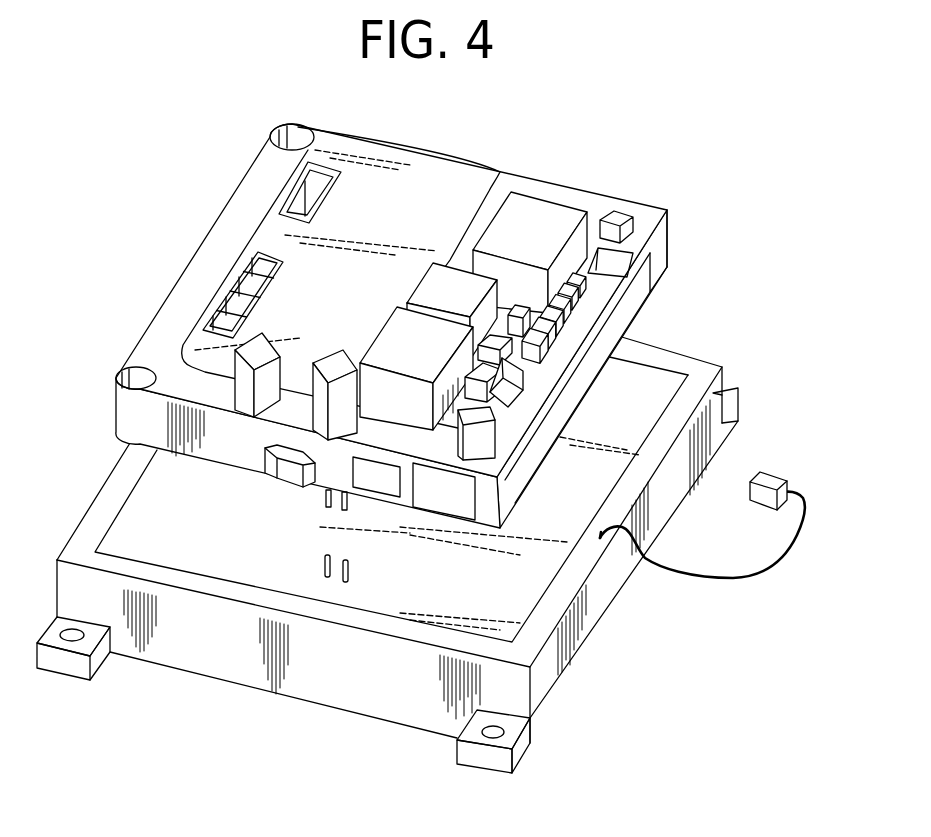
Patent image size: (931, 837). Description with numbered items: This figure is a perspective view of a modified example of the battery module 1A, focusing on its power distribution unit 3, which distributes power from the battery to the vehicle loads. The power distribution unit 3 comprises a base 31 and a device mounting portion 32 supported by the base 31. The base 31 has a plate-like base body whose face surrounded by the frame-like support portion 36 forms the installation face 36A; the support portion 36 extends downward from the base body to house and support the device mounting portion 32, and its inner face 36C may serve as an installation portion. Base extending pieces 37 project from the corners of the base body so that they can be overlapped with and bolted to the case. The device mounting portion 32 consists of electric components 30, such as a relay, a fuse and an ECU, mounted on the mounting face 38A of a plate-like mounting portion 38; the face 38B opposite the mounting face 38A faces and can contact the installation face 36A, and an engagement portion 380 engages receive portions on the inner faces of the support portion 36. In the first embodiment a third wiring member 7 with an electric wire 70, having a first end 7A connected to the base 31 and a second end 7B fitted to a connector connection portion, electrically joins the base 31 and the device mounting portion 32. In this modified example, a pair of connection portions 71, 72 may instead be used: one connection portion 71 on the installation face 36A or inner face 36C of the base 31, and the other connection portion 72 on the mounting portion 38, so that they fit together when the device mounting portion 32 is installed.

The battery module 1A is at (756, 149).
The power distribution unit 3 is at (800, 202).
The electric components 30 is at (392, 346).
The base 31 is at (740, 432).
The device mounting portion 32 is at (670, 249).
The support portion 36 is at (727, 388).
The installation face 36A is at (527, 592).
The inner face 36C is at (656, 403).
The base extending pieces 37 is at (735, 398).
The mounting portion 38 is at (662, 235).
The mounting face 38A is at (649, 213).
The face opposite of the mounting face 38B is at (653, 290).
The engagement portion 380 is at (289, 470).
The third wiring member 7 is at (805, 497).
The electric wire 70 is at (733, 580).
The first end 7A is at (607, 541).
The second end 7B is at (772, 484).
The connection portion 71 is at (322, 557).
The connection portion 72 is at (324, 494).